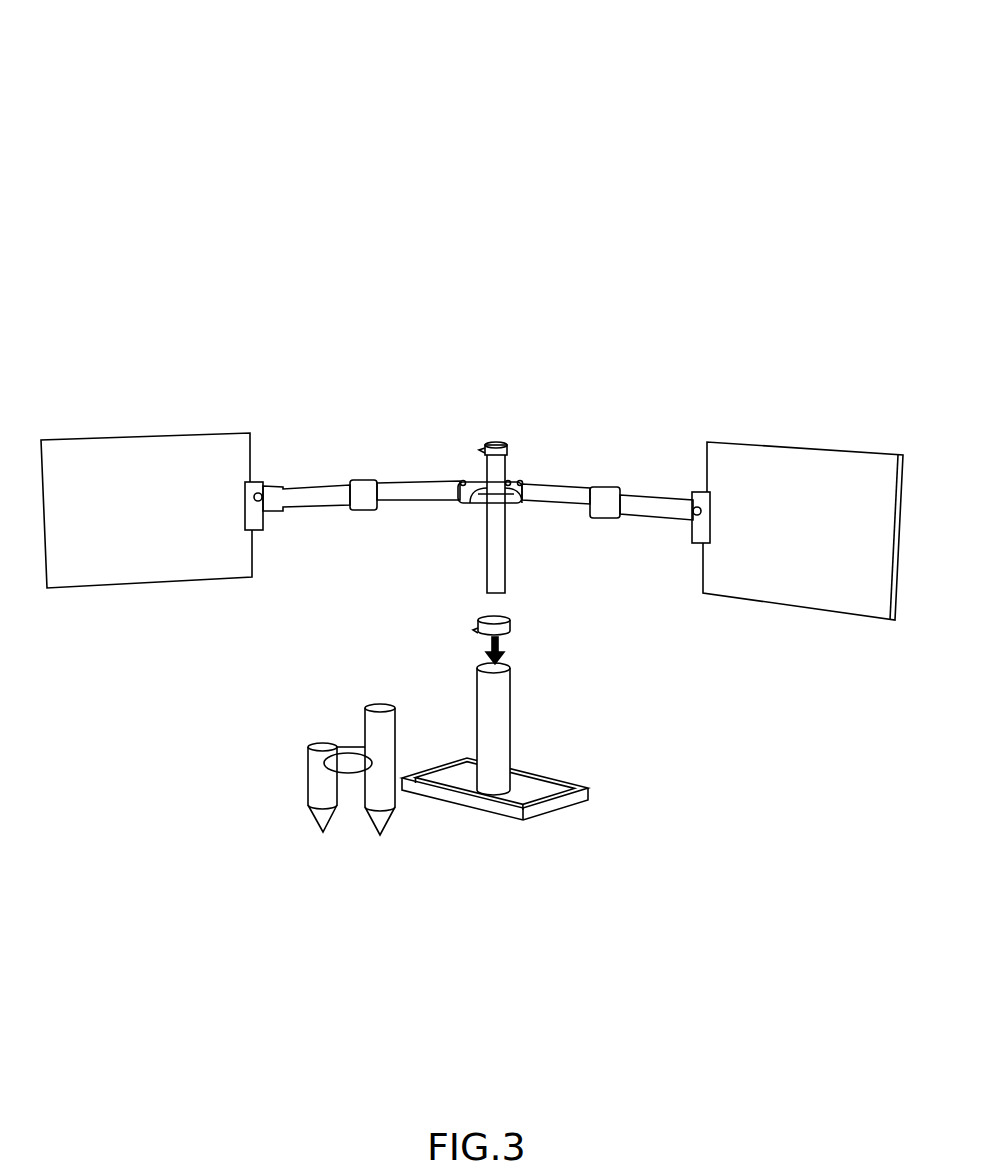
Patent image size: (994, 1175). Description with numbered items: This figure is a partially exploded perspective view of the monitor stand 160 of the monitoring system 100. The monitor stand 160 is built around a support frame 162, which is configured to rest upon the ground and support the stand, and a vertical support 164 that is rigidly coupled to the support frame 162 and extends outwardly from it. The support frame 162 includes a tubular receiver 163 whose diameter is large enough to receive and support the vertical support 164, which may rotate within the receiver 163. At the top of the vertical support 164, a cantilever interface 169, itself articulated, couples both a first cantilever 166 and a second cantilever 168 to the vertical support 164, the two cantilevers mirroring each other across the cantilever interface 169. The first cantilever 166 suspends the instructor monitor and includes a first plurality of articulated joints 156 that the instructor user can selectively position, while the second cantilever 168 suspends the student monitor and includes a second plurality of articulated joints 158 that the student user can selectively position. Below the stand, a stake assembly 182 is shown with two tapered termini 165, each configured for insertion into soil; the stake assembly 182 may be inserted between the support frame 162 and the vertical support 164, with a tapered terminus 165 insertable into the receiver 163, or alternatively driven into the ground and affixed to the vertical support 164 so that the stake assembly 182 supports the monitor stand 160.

The monitoring system 100 is at (563, 92).
The first plurality of articulated joints 156 is at (666, 558).
The second plurality of articulated joints 158 is at (281, 548).
The monitor stand 160 is at (493, 378).
The support frame 162 is at (512, 736).
The receiver 163 is at (508, 668).
The vertical support 164 is at (518, 573).
The tapered terminus 165 is at (318, 818).
The first cantilever 166 is at (699, 485).
The second cantilever 168 is at (465, 466).
The cantilever interface 169 is at (475, 508).
The stake assembly 182 is at (270, 698).